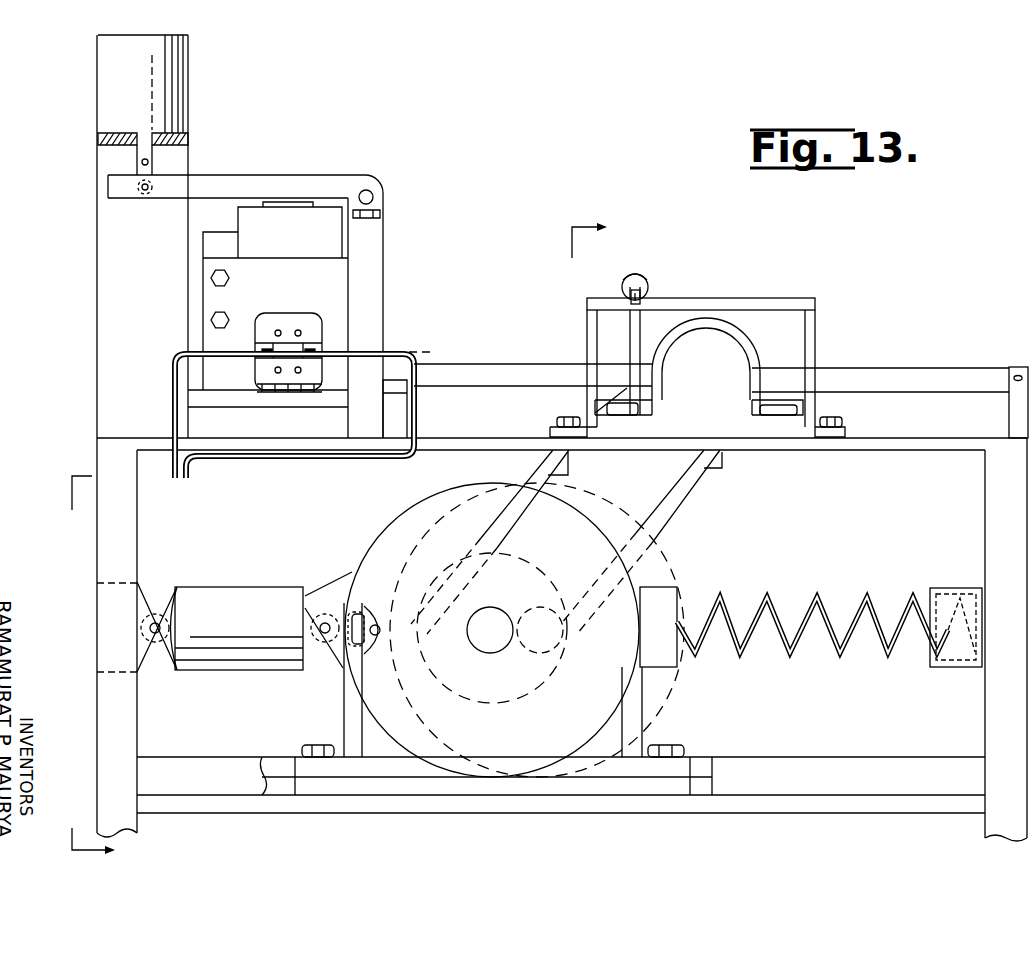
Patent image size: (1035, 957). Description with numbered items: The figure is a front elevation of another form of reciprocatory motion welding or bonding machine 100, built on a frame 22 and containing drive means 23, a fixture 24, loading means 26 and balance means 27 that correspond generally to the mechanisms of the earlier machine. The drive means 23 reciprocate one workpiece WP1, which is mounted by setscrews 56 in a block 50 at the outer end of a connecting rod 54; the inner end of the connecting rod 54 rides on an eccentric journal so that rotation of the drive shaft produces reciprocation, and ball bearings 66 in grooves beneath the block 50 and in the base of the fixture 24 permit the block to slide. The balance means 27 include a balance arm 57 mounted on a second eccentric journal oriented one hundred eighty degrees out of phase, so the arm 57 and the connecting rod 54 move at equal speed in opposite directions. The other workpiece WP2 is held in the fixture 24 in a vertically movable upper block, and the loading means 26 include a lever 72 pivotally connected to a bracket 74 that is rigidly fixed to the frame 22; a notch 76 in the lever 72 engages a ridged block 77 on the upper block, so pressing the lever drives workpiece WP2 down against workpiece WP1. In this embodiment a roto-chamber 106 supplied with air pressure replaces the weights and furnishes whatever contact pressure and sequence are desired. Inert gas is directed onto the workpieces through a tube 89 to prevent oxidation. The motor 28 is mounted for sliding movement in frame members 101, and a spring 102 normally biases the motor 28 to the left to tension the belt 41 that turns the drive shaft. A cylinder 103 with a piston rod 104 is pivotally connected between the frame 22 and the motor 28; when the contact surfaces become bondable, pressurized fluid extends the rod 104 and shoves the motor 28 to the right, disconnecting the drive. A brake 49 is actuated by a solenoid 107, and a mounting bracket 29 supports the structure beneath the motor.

The frame 22 is at (137, 537).
The drive means 23 is at (754, 336).
The fixture 24 is at (393, 246).
The loading means 26 is at (197, 146).
The balance means 27 is at (924, 363).
The motor 28 is at (418, 512).
The mounting bracket 29 is at (350, 713).
The belt 41 is at (686, 488).
The brake 49 is at (640, 320).
The block 50 is at (262, 380).
The connecting rod 54 is at (517, 384).
The setscrews 56 is at (298, 330).
The balance arm 57 is at (942, 386).
The ball bearings 66 is at (290, 393).
The lever 72 is at (237, 185).
The bracket 74 is at (377, 320).
The notch 76 is at (288, 200).
The ridged block 77 is at (290, 206).
The tube 89 is at (413, 353).
The bonding machine 100 is at (782, 287).
The frame members 101 is at (815, 791).
The spring 102 is at (787, 650).
The cylinder 103 is at (242, 614).
The piston rod 104 is at (310, 620).
The roto-chamber 106 is at (138, 92).
The solenoid 107 is at (623, 284).
The workpiece WP1 is at (283, 358).
The workpiece WP2 is at (283, 346).